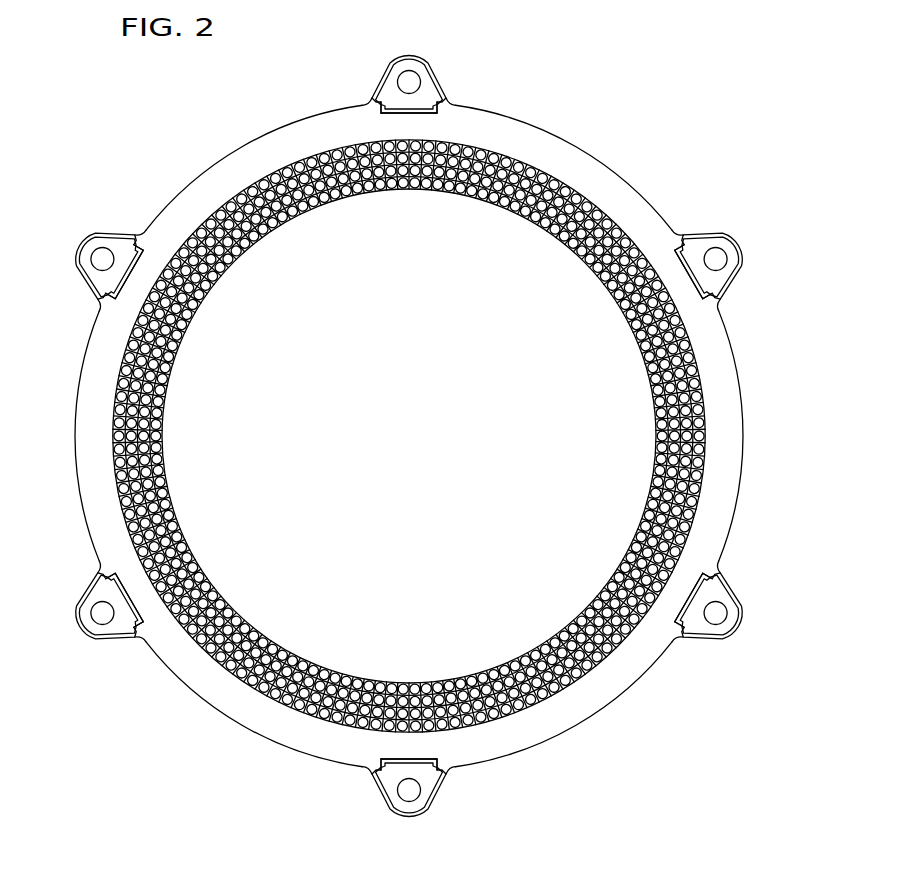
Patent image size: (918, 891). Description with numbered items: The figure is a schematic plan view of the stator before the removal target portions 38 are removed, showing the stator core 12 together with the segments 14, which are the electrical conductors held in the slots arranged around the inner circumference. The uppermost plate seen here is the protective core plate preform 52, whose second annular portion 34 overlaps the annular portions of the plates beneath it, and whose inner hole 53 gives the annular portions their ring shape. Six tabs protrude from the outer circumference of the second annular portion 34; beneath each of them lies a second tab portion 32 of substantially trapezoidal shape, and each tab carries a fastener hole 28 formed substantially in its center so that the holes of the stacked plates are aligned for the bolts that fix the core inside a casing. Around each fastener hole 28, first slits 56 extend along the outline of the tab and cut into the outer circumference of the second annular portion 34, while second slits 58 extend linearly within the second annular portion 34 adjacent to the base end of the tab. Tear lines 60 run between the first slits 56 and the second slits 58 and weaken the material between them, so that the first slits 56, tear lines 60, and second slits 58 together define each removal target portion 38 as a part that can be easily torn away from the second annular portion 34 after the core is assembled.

The stator core 12 is at (413, 436).
The segments 14 is at (409, 404).
The fastener hole 28 is at (410, 80).
The second tab portion 32 is at (380, 66).
The second annular portion 34 is at (413, 436).
The removal target portion 38 is at (392, 75).
The protective core plate preform 52 is at (262, 152).
The inner hole 53 is at (540, 224).
The first slit 56 is at (362, 101).
The second slit 58 is at (397, 113).
The tear line 60 is at (371, 117).